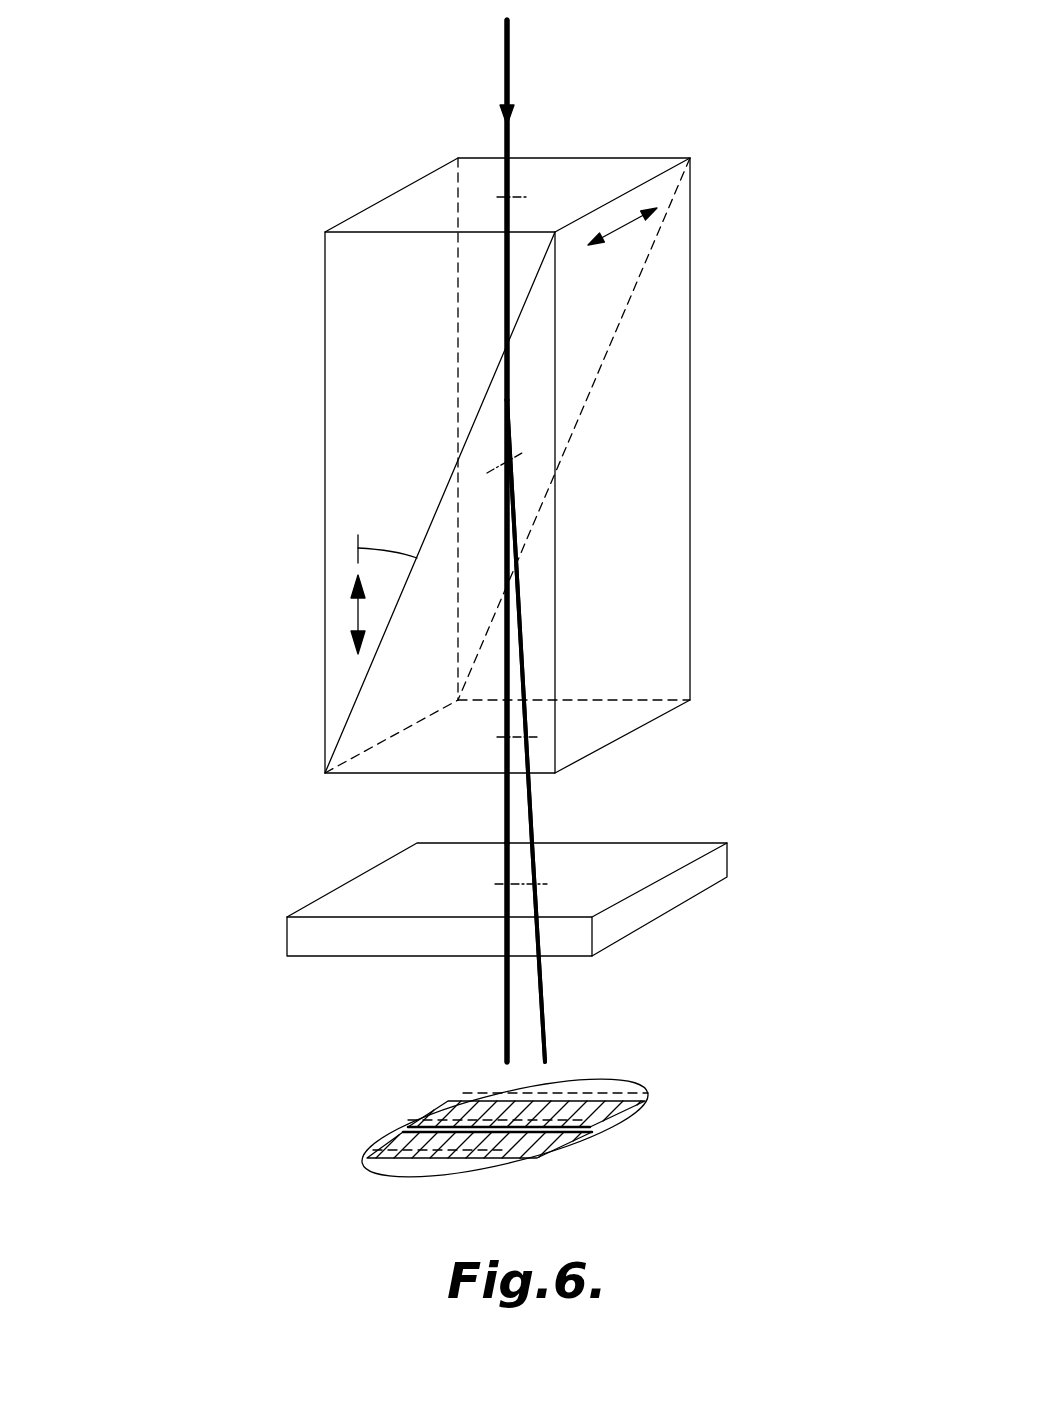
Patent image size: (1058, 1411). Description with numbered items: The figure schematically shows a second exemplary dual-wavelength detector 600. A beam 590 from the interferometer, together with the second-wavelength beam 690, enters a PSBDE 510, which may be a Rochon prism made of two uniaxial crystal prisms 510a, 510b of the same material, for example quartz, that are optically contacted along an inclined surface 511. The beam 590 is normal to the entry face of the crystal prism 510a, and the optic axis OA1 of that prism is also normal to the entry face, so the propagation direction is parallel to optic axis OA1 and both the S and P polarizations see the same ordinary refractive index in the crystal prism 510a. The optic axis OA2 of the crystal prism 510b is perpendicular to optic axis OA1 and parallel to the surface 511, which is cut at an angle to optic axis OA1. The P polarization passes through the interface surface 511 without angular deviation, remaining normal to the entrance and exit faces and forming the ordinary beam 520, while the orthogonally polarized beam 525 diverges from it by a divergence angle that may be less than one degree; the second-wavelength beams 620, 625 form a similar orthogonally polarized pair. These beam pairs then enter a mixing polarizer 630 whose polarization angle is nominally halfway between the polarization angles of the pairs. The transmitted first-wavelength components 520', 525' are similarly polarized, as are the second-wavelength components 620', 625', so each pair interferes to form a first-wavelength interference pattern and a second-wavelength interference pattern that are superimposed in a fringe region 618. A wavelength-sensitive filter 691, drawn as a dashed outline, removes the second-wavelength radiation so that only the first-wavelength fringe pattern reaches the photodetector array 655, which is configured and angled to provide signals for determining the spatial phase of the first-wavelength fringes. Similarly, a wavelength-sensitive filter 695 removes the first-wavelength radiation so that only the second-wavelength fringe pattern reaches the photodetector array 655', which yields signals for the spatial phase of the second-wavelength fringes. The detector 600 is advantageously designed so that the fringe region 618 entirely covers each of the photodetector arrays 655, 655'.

The dual-wavelength detector 600 is at (210, 136).
The beam 590 is at (510, 48).
The beam 690 is at (510, 48).
The PSBDE 510 is at (511, 451).
The crystal prism 510a is at (368, 443).
The crystal prism 510b is at (645, 363).
The inclined surface 511 is at (472, 465).
The optic axis OA1 is at (357, 618).
The optic axis OA2 is at (625, 225).
The beam 520 is at (439, 621).
The beam 620 is at (439, 621).
The beam 525 is at (591, 621).
The beam 625 is at (591, 621).
The mixing polarizer 630 is at (727, 870).
The first-wavelength component 520' is at (429, 952).
The second-wavelength component 620' is at (429, 952).
The first-wavelength component 525' is at (617, 952).
The second-wavelength component 625' is at (617, 952).
The fringe region 618 is at (425, 1178).
The wavelength-sensitive filter 695 is at (549, 1117).
The photodetector array 655 is at (529, 1141).
The photodetector array 655' is at (574, 1110).
The wavelength-sensitive filter 691 is at (380, 1140).